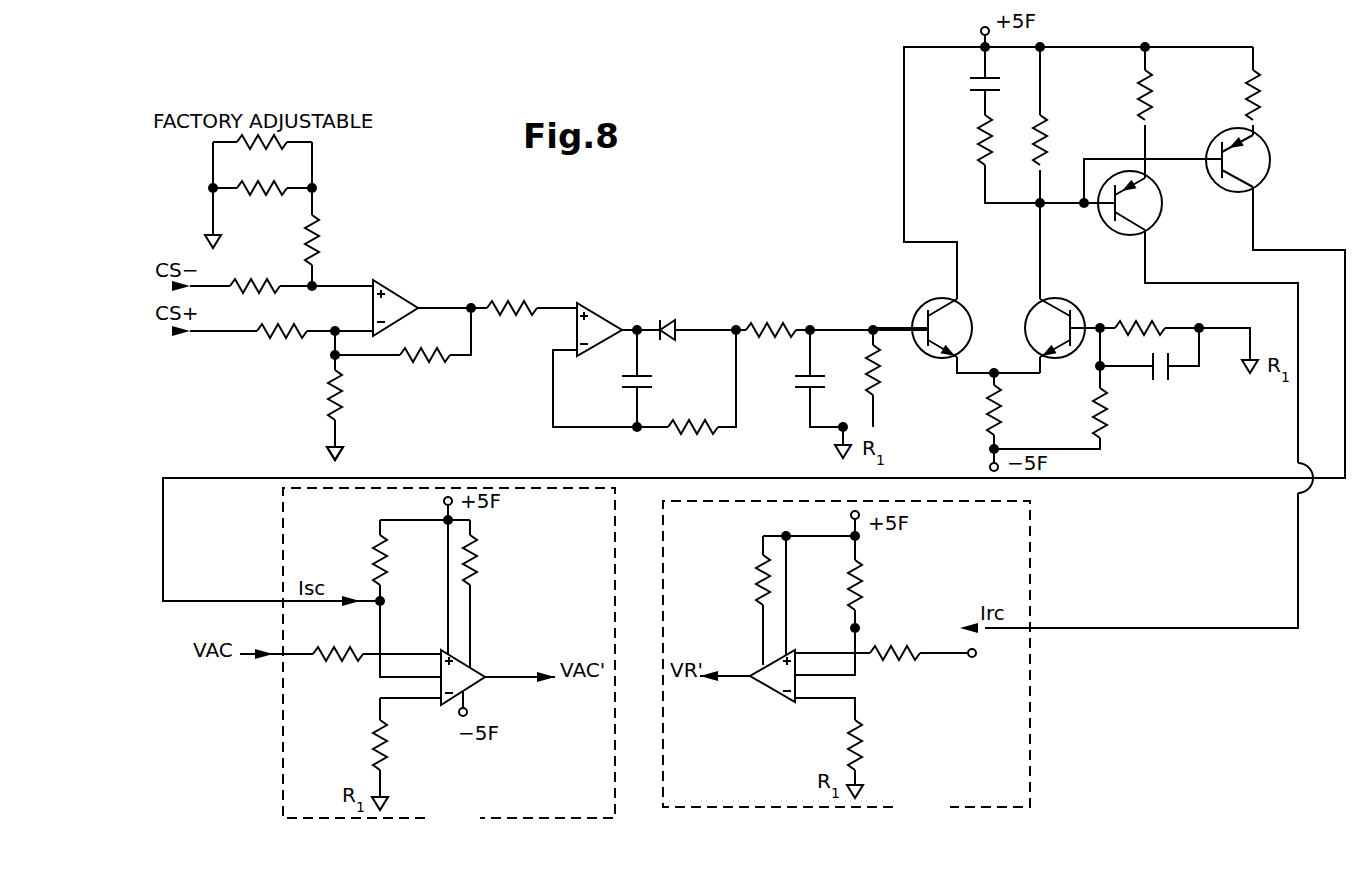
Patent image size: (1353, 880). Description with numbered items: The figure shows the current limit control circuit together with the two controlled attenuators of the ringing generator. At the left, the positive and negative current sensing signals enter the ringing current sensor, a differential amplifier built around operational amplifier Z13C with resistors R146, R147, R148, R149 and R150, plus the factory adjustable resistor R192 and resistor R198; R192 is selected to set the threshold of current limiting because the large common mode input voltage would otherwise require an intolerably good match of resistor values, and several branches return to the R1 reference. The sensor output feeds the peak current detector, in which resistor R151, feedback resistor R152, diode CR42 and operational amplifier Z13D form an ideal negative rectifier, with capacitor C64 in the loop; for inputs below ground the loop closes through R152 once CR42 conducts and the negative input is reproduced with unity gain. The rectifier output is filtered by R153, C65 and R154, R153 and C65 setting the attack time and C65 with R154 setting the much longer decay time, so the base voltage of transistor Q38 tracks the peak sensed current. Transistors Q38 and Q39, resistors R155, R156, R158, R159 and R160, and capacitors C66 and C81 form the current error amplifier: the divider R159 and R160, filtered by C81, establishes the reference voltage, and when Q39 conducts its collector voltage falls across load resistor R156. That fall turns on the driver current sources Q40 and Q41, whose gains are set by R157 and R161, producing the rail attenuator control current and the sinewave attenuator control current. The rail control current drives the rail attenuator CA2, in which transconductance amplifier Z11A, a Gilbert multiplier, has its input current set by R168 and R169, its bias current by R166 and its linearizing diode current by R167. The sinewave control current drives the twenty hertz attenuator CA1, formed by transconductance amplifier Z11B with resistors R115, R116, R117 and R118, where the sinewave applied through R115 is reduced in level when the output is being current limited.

The factory adjustable resistor R192 is at (262, 119).
The resistor R198 is at (262, 177).
The resistor R148 is at (344, 240).
The resistor R146 is at (262, 299).
The resistor R147 is at (280, 347).
The resistor R149 is at (365, 395).
The resistor R150 is at (442, 373).
The return ground R1 is at (350, 454).
The operational amplifier Z13C is at (413, 302).
The resistor R151 is at (514, 296).
The operational amplifier Z13D is at (619, 322).
The diode CR42 is at (696, 319).
The capacitor C64 is at (622, 395).
The resistor R152 is at (700, 410).
The resistor R153 is at (780, 311).
The capacitor C65 is at (795, 398).
The resistor R154 is at (905, 376).
The transistor Q38 is at (922, 317).
The transistor Q39 is at (1064, 312).
The resistor R158 is at (1025, 410).
The resistor R160 is at (1131, 416).
The resistor R159 is at (1164, 316).
The capacitor C81 is at (1183, 379).
The capacitor C66 is at (967, 71).
The resistor R155 is at (956, 140).
The load resistor R156 is at (1071, 140).
The resistor R157 is at (1174, 87).
The resistor R161 is at (1285, 93).
The transistor Q40 is at (1147, 210).
The transistor Q41 is at (1254, 166).
The 20 Hz attenuator CA1 is at (449, 660).
The resistor R117 is at (350, 554).
The resistor R118 is at (501, 560).
The resistor R115 is at (335, 668).
The resistor R116 is at (411, 751).
The transconductance amplifier Z11B is at (488, 674).
The rail attenuator CA2 is at (846, 661).
The resistor R166 is at (733, 593).
The resistor R167 is at (882, 579).
The resistor R168 is at (908, 671).
The resistor R169 is at (886, 745).
The transconductance amplifier Z11A is at (761, 684).